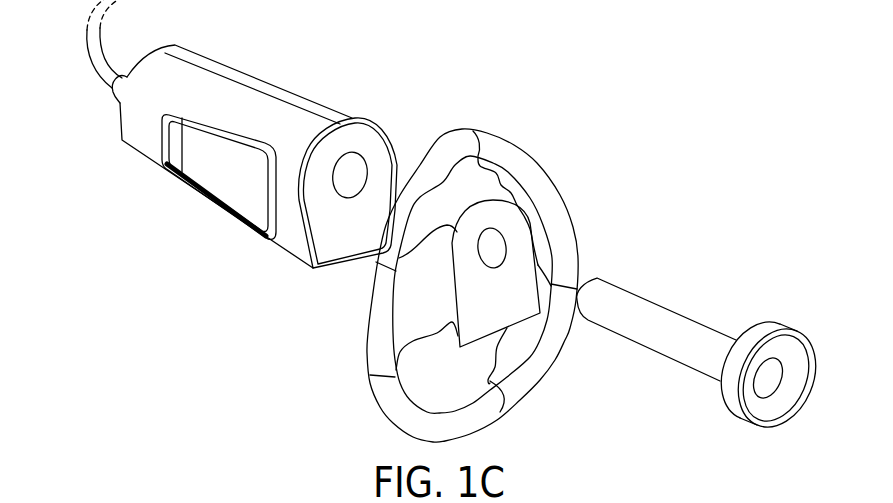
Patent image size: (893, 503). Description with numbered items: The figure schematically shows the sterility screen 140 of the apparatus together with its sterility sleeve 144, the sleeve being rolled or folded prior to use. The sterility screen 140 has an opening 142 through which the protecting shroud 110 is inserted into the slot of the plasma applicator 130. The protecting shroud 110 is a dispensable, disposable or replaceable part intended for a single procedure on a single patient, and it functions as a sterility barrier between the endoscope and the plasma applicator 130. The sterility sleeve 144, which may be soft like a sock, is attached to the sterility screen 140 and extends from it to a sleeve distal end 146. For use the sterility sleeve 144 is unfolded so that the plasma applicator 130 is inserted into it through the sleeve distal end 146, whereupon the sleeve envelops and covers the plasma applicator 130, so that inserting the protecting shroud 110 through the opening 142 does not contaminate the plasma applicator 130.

The protecting shroud 110 is at (667, 305).
The plasma applicator 130 is at (147, 147).
The sterility screen 140 is at (534, 262).
The opening 142 is at (494, 251).
The sterility sleeve 144 is at (512, 146).
The sleeve distal end 146 is at (370, 318).